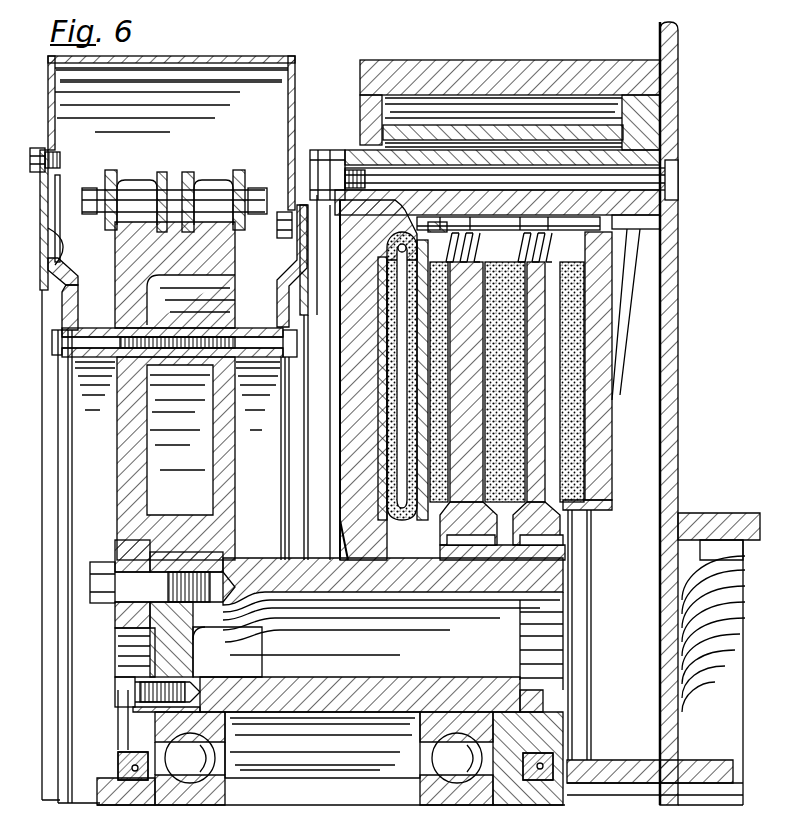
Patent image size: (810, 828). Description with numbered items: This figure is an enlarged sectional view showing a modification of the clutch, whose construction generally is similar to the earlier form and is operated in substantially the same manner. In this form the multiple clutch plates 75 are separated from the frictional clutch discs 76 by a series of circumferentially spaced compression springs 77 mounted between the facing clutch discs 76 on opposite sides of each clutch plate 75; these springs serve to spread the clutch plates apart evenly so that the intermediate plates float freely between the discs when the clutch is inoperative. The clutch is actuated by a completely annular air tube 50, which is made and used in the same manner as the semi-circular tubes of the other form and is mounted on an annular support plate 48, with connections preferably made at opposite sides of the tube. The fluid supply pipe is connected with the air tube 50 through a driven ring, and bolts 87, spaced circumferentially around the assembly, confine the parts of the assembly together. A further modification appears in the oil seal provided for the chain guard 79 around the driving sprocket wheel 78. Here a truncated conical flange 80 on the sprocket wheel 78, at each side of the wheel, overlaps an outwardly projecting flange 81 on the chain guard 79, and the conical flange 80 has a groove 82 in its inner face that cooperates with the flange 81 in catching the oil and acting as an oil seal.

The chain guard 79 is at (55, 128).
The driving sprocket wheel 78 is at (218, 182).
The truncated conical flange 80 is at (62, 245).
The groove 82 is at (50, 270).
The outwardly projecting flange 81 is at (58, 292).
The bolts 87 is at (667, 182).
The compression springs 77 is at (640, 292).
The clutch plates 75 is at (470, 402).
The frictional clutch discs 76 is at (485, 470).
The air tube 50 is at (392, 362).
The annular support plate 48 is at (380, 480).